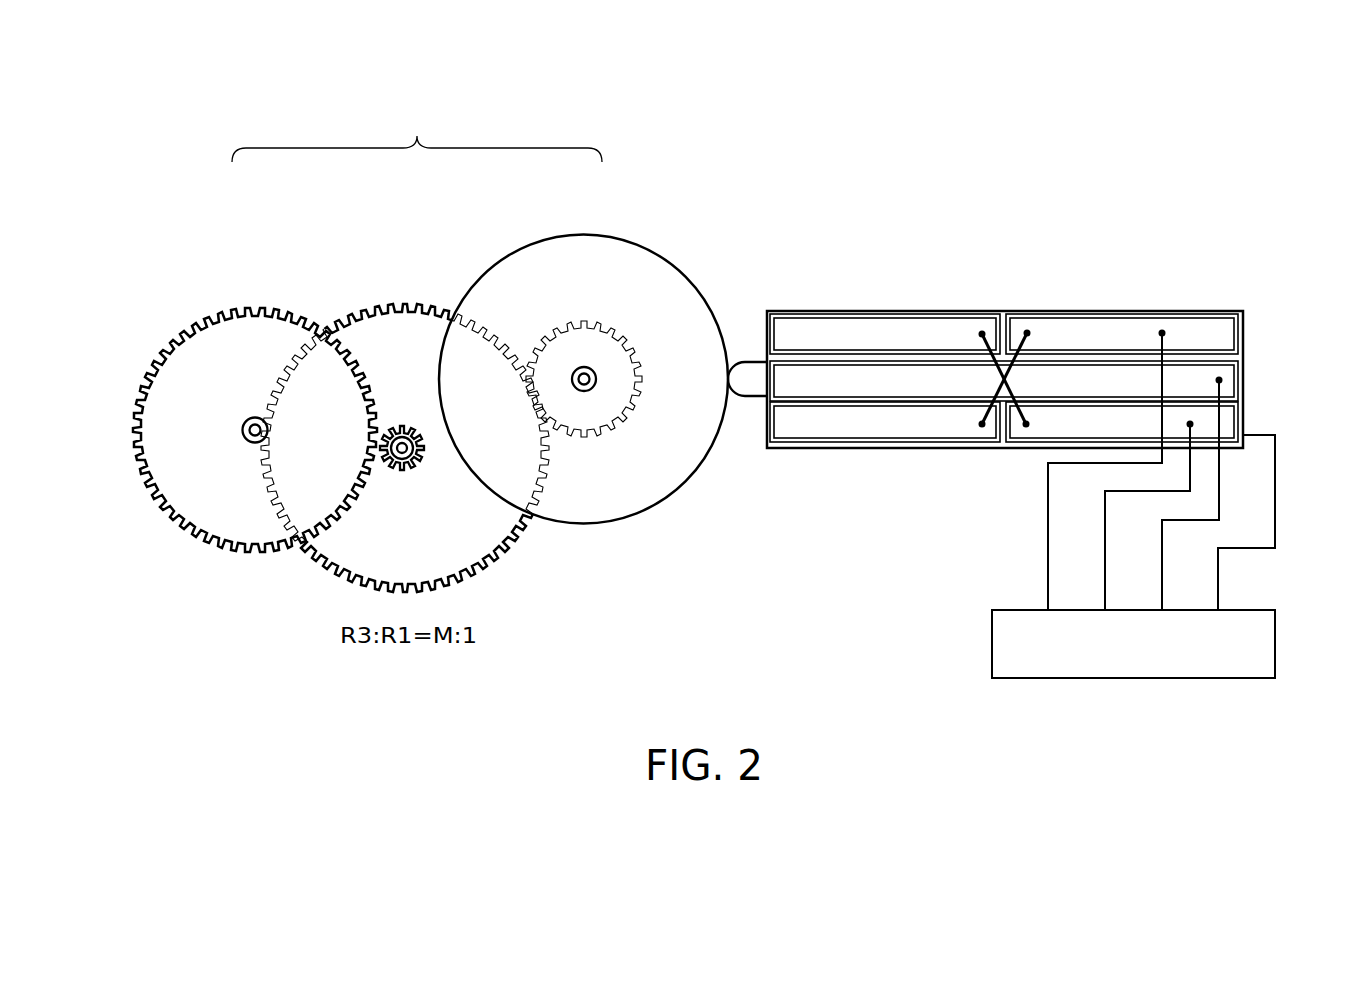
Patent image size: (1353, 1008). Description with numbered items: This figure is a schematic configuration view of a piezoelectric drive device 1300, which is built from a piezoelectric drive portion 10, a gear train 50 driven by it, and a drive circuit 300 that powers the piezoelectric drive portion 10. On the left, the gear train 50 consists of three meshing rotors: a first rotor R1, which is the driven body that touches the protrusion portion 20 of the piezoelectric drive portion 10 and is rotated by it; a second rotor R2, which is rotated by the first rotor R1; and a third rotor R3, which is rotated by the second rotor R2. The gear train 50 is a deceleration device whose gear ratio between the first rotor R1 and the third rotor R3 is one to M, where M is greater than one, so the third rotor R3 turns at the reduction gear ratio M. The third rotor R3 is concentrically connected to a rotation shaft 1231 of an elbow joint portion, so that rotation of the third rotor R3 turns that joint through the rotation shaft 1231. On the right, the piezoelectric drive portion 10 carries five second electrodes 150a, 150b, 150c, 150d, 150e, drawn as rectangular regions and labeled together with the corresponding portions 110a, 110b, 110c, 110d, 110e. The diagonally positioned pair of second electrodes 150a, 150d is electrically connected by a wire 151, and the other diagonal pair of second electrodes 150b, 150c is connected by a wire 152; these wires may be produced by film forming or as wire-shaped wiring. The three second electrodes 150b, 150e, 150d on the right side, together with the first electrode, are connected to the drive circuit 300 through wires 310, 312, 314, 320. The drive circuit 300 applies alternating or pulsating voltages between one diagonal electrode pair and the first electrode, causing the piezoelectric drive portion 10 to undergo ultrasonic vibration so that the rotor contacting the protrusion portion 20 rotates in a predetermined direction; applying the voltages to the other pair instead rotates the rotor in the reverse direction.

The piezoelectric drive device 1300 is at (1163, 107).
The piezoelectric drive portion 10 is at (1005, 358).
The protrusion portion 20 is at (752, 360).
The gear train 50 is at (430, 346).
The first rotor R1 is at (584, 208).
The second rotor R2 is at (396, 276).
The third rotor R3 is at (251, 276).
The rotation shaft 1231 is at (243, 436).
The second electrode 150a is at (885, 334).
The second electrode 150b is at (1122, 334).
The second electrode 150c is at (885, 422).
The second electrode 150d is at (1122, 422).
The second electrode 150e is at (1004, 381).
The first magnetic core 110a is at (925, 346).
The second magnetic core 110b is at (1135, 345).
The third magnetic core 110c is at (925, 436).
The fourth magnetic core 110d is at (1135, 435).
The fifth magnetic core 110e is at (1135, 391).
The wire 151 is at (980, 340).
The wire 152 is at (982, 413).
The wire 310 is at (1048, 507).
The wire 312 is at (1162, 565).
The wire 314 is at (1105, 537).
The wire 320 is at (1218, 578).
The drive circuit 300 is at (1178, 678).